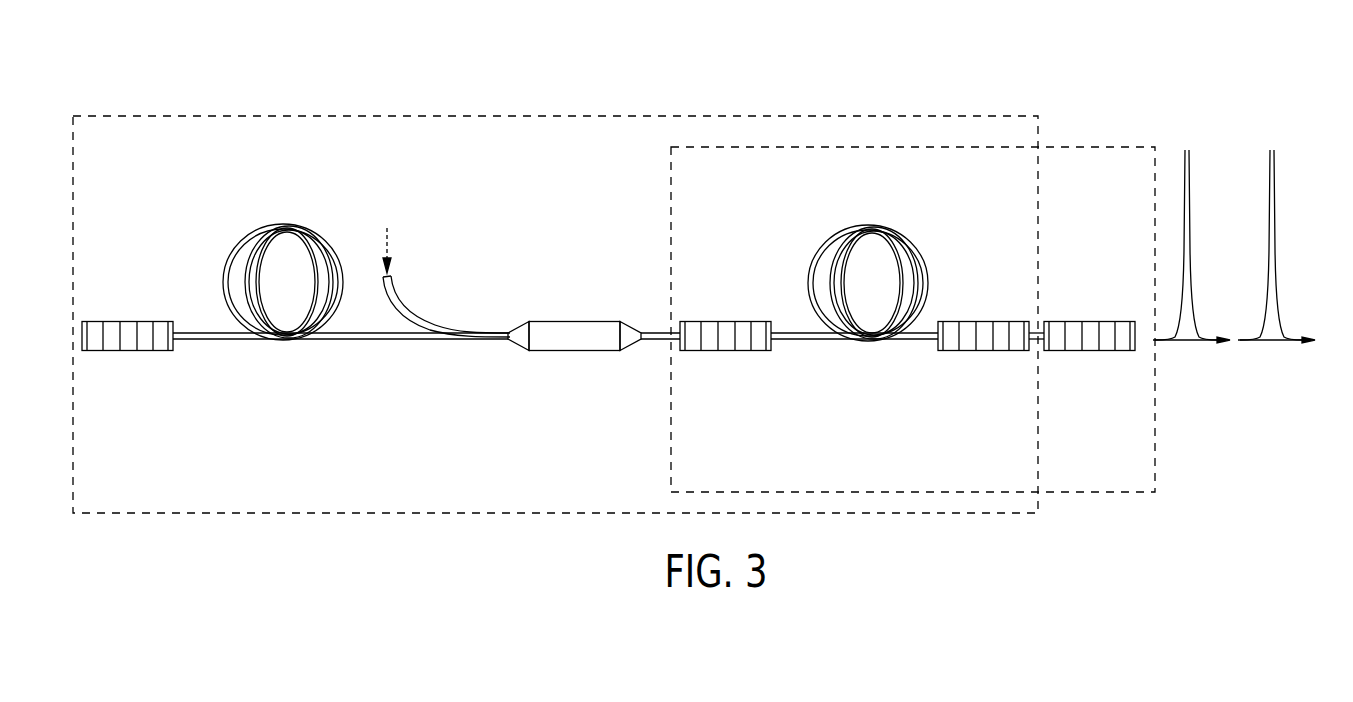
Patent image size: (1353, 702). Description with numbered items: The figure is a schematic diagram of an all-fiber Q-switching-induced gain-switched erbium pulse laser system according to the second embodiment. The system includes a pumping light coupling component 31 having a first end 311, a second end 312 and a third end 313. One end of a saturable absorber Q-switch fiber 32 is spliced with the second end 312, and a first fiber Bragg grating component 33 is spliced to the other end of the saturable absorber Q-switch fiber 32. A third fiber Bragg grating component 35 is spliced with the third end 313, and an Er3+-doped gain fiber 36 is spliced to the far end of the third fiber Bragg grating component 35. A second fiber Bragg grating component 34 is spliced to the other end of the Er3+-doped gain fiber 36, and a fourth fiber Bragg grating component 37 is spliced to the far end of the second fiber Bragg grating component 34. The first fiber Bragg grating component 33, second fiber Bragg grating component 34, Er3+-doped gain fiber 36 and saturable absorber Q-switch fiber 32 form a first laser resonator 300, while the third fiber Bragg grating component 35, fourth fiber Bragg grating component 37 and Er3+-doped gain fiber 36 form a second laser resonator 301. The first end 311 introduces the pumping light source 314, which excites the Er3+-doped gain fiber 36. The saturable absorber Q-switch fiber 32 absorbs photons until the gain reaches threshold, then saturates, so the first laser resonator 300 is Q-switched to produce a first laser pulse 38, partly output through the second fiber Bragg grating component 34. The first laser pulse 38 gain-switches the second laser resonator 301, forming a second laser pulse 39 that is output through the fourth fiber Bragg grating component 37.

The first laser resonator 300 is at (862, 115).
The second laser resonator 301 is at (1073, 146).
The pumping light coupling component 31 is at (570, 342).
The first end 311 is at (406, 292).
The second end 312 is at (383, 341).
The third end 313 is at (645, 341).
The pumping light source 314 is at (389, 236).
The saturable absorber Q-switch fiber 32 is at (276, 225).
The first fiber Bragg grating component 33 is at (131, 338).
The second fiber Bragg grating component 34 is at (985, 340).
The third fiber Bragg grating component 35 is at (727, 340).
The Er3+-doped gain fiber 36 is at (855, 228).
The fourth fiber Bragg grating component 37 is at (1075, 340).
The first laser pulse 38 is at (1273, 184).
The second laser pulse 39 is at (1188, 184).